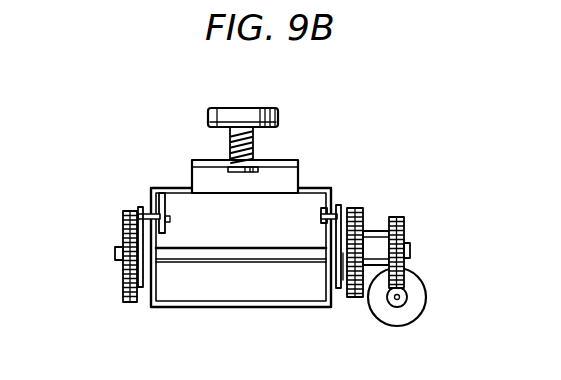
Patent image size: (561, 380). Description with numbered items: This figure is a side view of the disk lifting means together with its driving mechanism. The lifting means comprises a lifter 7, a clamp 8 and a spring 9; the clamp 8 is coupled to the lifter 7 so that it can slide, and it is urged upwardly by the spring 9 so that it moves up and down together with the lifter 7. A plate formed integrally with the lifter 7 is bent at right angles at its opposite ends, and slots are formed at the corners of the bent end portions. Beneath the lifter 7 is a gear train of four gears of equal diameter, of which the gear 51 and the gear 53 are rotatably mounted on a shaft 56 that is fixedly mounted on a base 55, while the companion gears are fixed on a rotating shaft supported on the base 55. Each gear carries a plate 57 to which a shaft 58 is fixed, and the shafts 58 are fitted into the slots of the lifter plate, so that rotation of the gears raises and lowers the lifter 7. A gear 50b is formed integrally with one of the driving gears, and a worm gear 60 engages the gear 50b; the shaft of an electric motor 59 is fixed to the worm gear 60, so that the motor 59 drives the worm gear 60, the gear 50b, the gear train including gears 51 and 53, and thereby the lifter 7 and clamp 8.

The lifter 7 is at (192, 173).
The clamp 8 is at (219, 108).
The spring 9 is at (231, 142).
The gear 50b is at (404, 217).
The gear 51 is at (363, 214).
The gear 53 is at (123, 211).
The base 55 is at (293, 308).
The shaft 56 is at (115, 253).
The plate 57 is at (139, 207).
The shaft 58 is at (160, 207).
The electric motor 59 is at (421, 317).
The worm gear 60 is at (396, 303).